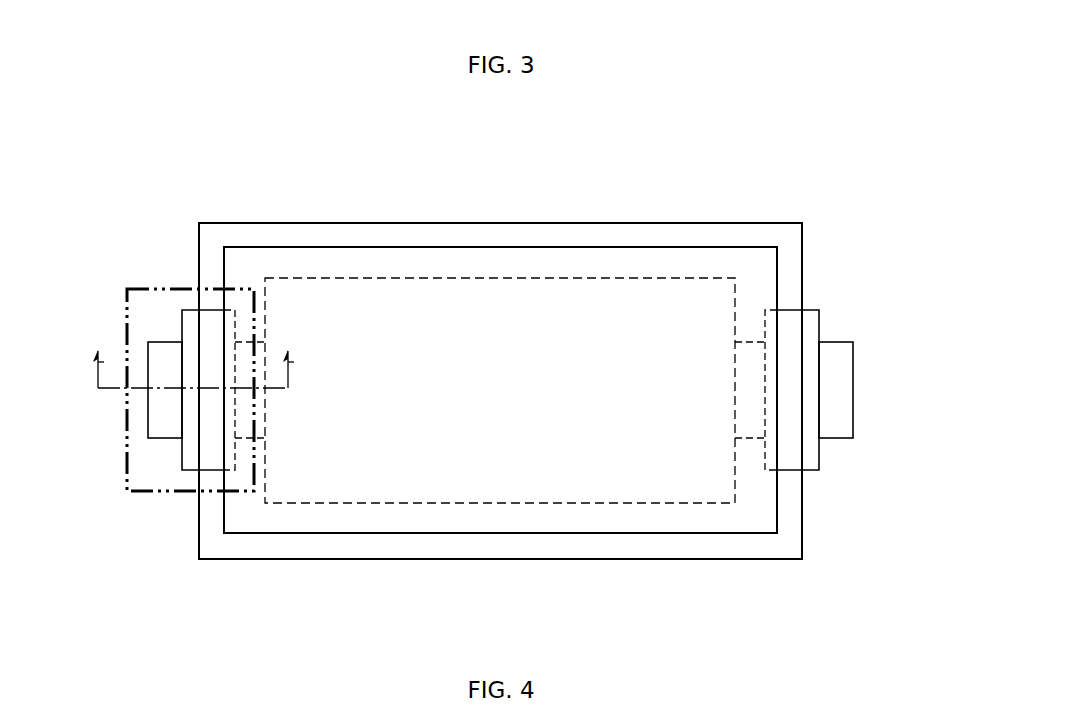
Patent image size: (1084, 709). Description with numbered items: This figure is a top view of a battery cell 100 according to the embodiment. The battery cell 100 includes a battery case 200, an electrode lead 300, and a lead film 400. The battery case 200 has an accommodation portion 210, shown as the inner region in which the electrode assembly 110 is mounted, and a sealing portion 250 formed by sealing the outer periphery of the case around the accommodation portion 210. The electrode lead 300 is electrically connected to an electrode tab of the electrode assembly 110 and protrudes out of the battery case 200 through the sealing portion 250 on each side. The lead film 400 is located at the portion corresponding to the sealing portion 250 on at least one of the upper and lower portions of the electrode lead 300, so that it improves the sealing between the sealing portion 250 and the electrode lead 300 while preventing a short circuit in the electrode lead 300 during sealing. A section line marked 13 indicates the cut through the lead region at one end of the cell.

The battery cell 100 is at (220, 152).
The electrode assembly 110 is at (515, 277).
The battery case 200 is at (445, 603).
The accommodation portion 210 is at (465, 520).
The sealing portion 250 is at (525, 543).
The electrode lead 300 is at (150, 423).
The lead film 400 is at (188, 455).
The section line for FIG. 13 is at (194, 390).